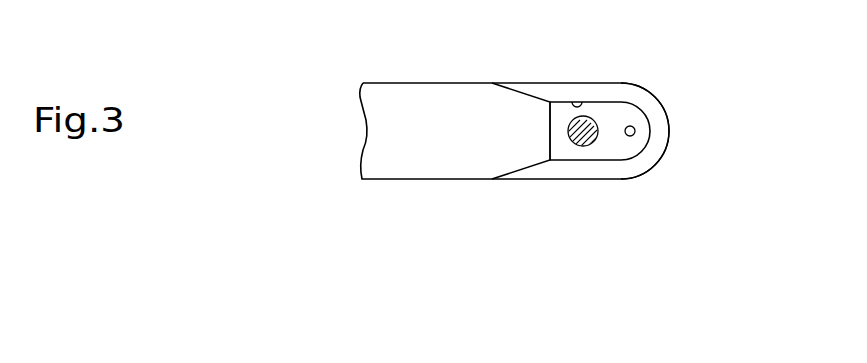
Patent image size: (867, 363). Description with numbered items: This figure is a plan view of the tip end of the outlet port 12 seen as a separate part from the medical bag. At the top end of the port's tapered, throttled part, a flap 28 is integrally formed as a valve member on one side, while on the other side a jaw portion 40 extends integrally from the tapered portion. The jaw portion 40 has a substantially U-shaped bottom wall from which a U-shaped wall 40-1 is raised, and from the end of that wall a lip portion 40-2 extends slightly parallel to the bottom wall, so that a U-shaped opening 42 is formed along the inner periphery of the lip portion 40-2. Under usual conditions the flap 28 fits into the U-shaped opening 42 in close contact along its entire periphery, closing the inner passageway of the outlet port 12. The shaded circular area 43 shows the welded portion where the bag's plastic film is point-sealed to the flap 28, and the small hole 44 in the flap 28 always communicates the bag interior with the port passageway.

The outlet port 12 is at (427, 180).
The flap 28 is at (577, 153).
The jaw portion 40 is at (592, 180).
The U-shaped wall 40-1 is at (669, 130).
The lip portion 40-2 is at (612, 173).
The U-shaped opening 42 is at (578, 105).
The welded portion 43 is at (568, 131).
The small hole 44 is at (630, 125).